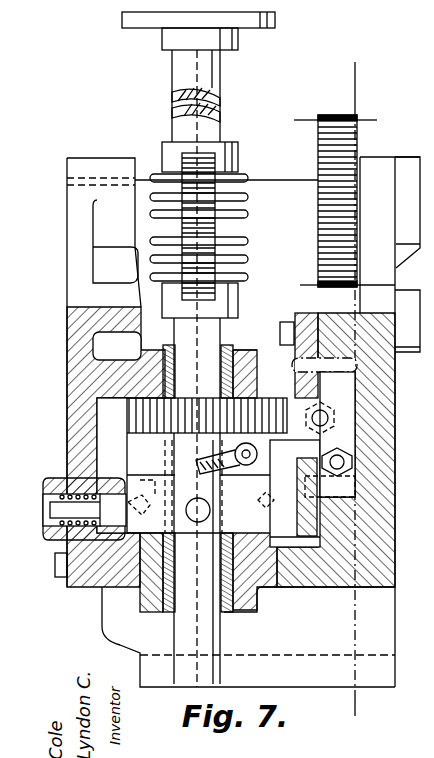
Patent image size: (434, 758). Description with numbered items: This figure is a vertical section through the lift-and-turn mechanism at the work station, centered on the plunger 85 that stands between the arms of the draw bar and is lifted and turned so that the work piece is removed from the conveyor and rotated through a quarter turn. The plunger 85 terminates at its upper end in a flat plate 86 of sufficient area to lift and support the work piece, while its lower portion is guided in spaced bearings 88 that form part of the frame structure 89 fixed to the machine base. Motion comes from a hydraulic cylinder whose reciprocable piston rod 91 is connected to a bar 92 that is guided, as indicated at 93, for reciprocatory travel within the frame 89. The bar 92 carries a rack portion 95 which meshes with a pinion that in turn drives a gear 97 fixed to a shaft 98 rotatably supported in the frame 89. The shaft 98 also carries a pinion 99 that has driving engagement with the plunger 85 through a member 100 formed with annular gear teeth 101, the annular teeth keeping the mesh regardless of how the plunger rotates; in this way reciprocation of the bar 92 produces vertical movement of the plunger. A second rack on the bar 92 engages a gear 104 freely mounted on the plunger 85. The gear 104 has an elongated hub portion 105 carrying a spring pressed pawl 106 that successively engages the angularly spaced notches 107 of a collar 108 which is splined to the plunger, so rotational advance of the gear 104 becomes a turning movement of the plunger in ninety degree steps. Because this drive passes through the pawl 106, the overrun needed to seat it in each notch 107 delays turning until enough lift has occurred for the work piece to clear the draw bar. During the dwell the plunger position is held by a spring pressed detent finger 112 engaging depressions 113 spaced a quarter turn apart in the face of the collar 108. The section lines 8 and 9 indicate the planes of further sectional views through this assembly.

The section line 8- 8 is at (360, 88).
The section line 9- 9 is at (108, 425).
The plunger 85 is at (183, 74).
The flat plate 86 is at (274, 19).
The spaced bearings 88 is at (225, 350).
The frame structure 89 is at (80, 331).
The piston rod 91 is at (330, 418).
The bar 92 is at (347, 396).
The guide 93 is at (340, 360).
The rack portion 95 is at (304, 368).
The gear 97 is at (357, 148).
The shaft 98 is at (277, 180).
The pinion 99 is at (212, 158).
The member 100 is at (244, 256).
The annular gear teeth 101 is at (244, 277).
The gear 104 is at (197, 410).
The elongated hub portion 105 is at (183, 465).
The spring pressed pawl 106 is at (255, 462).
The notches 107 is at (212, 470).
The collar 108 is at (248, 510).
The spring pressed detent finger 112 is at (62, 496).
The depressions 113 is at (197, 523).